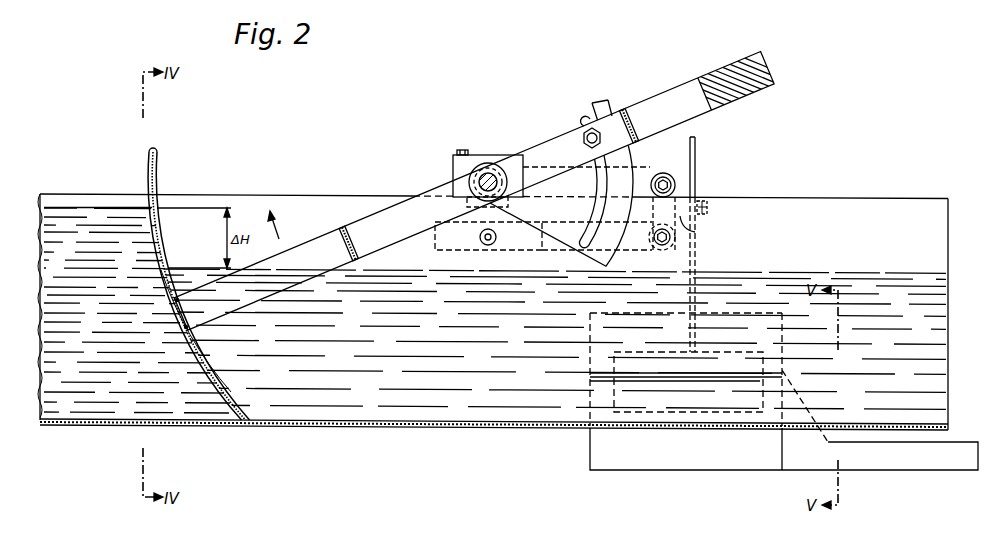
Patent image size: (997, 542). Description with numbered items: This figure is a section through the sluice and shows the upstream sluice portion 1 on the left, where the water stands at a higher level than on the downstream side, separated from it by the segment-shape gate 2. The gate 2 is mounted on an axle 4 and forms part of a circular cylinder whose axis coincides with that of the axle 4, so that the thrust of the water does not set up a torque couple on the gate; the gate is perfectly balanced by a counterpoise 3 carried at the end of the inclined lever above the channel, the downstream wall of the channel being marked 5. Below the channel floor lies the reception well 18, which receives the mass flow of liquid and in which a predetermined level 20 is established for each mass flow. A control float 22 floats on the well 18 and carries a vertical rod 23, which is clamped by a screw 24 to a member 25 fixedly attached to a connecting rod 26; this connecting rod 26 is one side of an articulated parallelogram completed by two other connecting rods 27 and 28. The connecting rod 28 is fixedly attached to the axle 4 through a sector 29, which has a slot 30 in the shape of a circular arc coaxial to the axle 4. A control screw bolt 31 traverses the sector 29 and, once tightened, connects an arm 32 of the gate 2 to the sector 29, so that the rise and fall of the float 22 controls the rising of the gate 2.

The upstream sluice portion 1 is at (42, 256).
The segment-shape gate 2 is at (165, 240).
The counterpoise 3 is at (765, 64).
The axle 4 is at (488, 166).
The channel wall 5 is at (935, 330).
The reception well 18 is at (788, 335).
The predetermined level 20 is at (600, 374).
The control float 22 is at (738, 352).
The vertical rod 23 is at (696, 145).
The screw 24 is at (708, 208).
The member 25 is at (690, 226).
The connecting rod 26 is at (656, 226).
The connecting rod 27 is at (634, 240).
The connecting rod 28 is at (645, 173).
The sector 29 is at (563, 118).
The slot 30 is at (622, 157).
The control screw bolt 31 is at (597, 118).
The arm 32 is at (550, 142).